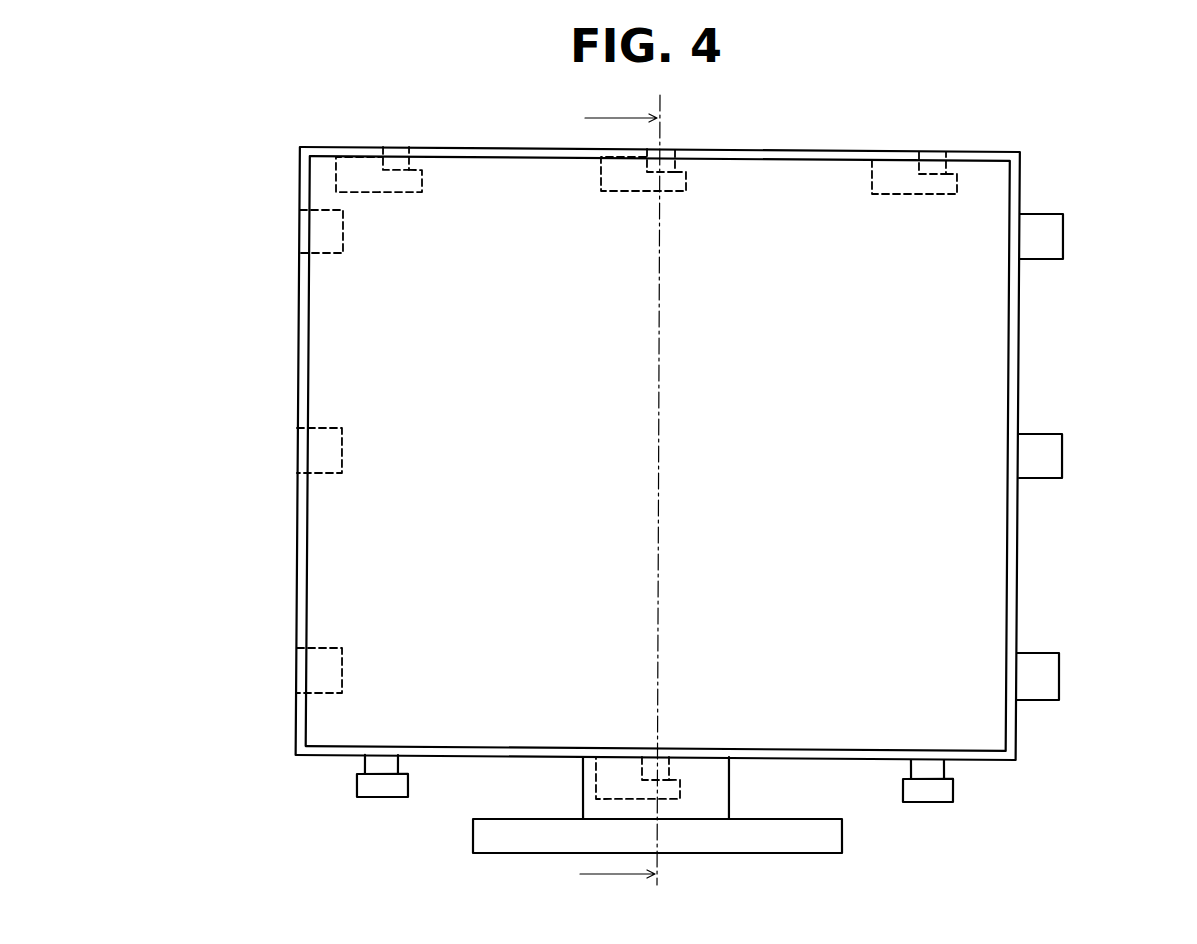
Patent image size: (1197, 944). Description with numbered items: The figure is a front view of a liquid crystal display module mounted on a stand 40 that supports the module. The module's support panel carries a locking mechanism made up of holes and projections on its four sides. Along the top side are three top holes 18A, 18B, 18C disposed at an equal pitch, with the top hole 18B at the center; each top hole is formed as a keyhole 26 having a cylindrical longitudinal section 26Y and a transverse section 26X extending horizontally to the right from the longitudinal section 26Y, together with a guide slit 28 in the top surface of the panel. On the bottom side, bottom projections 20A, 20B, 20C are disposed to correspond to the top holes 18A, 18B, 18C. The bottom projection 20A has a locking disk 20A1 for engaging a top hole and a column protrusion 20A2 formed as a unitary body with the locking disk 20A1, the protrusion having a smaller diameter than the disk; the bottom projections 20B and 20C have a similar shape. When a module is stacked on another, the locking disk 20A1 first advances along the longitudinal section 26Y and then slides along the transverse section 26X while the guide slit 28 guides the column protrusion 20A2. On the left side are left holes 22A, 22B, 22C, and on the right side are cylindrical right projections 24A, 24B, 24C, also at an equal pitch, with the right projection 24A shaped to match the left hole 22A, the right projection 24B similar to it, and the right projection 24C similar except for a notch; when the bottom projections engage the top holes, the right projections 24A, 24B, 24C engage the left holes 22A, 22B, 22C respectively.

The top hole 18A is at (405, 152).
The top hole 18B is at (617, 193).
The top hole 18C is at (903, 195).
The bottom projection 20A is at (443, 784).
The locking disk 20A1 is at (408, 783).
The column protrusion 20A2 is at (387, 765).
The bottom projection 20B is at (663, 800).
The bottom projection 20C is at (927, 802).
The left hole 22A is at (297, 665).
The left hole 22B is at (297, 448).
The left hole 22C is at (300, 231).
The right projection 24A is at (1059, 672).
The right projection 24B is at (1062, 458).
The right projection 24C is at (1063, 232).
The keyhole 26 is at (405, 152).
The transverse section 26X is at (422, 177).
The longitudinal section 26Y is at (355, 168).
The guide slit 28 is at (408, 136).
The stand 40 is at (772, 843).